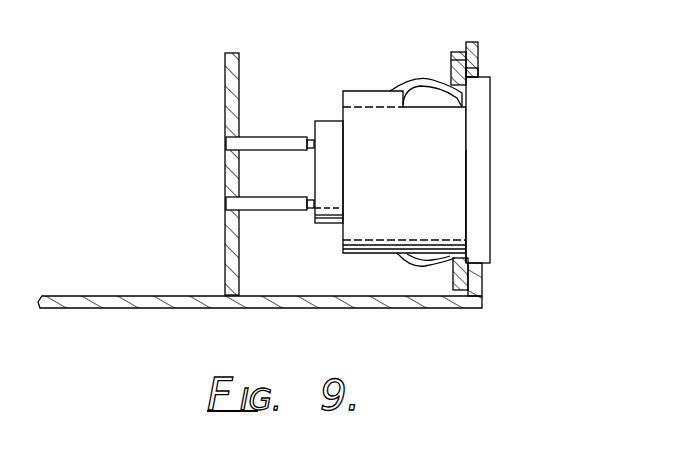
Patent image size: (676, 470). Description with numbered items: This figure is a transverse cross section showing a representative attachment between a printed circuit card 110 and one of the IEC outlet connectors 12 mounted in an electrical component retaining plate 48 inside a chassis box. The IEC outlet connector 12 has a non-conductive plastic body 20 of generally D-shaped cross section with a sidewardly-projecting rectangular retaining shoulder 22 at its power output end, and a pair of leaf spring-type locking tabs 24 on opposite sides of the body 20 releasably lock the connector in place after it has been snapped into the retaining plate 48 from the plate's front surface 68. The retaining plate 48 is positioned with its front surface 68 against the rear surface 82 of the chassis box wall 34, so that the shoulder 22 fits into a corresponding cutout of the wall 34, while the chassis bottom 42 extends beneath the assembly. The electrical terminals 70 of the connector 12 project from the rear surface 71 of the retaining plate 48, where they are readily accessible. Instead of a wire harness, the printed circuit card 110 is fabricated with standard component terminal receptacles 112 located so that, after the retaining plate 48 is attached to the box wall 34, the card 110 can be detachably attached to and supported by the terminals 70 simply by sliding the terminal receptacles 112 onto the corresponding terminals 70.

The IEC outlet connector 12 is at (489, 125).
The body 20 is at (362, 255).
The retaining shoulder 22 is at (488, 240).
The locking tabs 24 is at (453, 87).
The box wall 34 is at (479, 50).
The bottom 42 is at (168, 310).
The electrical component retaining plate 48 is at (449, 50).
The front surface 68 is at (480, 72).
The electrical terminals 70 is at (310, 138).
The rear surface 71 is at (448, 60).
The rear surface 82 is at (462, 285).
The printed circuit card 110 is at (223, 80).
The terminal receptacles 112 is at (270, 173).